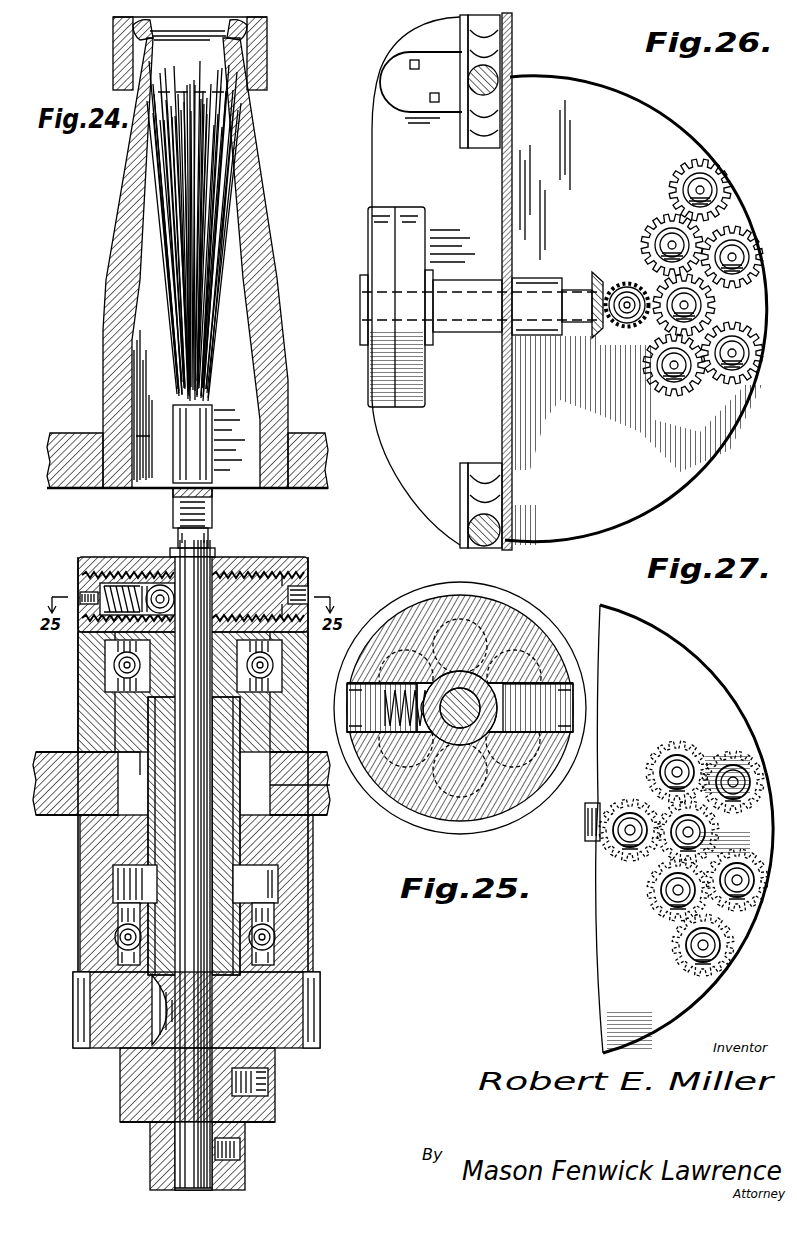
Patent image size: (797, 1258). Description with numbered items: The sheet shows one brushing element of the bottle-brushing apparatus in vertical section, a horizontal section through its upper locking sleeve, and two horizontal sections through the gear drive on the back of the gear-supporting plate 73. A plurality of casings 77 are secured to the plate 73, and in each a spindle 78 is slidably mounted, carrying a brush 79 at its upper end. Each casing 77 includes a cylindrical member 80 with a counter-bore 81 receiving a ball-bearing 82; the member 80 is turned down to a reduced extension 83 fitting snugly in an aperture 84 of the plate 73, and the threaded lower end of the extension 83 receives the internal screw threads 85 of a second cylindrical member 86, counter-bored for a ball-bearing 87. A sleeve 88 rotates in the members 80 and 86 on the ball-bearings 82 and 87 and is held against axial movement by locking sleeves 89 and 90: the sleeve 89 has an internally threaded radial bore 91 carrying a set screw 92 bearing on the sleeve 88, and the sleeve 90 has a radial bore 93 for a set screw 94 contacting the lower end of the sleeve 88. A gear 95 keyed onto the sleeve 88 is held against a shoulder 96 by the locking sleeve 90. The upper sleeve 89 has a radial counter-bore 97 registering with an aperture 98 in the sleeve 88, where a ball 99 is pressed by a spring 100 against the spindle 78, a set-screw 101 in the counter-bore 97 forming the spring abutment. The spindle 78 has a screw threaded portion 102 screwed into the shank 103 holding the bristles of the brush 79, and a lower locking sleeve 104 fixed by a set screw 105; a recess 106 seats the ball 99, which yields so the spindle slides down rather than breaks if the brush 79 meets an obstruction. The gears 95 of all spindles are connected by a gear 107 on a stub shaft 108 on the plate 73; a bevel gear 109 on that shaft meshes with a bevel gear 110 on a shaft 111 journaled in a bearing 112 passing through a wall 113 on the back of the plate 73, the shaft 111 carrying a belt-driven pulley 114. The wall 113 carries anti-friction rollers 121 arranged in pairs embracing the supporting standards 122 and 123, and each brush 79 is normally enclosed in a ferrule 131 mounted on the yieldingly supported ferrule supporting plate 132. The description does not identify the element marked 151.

In FIG. 24, the gear-supporting plate 73 is at (44, 815).
In FIG. 26, the gear-supporting plate 73 is at (596, 88).
In FIG. 27, the gear-supporting plate 73 is at (660, 645).
In FIG. 24, the casing 77 is at (70, 721).
In FIG. 24, the spindle 78 is at (186, 882).
In FIG. 27, the spindle 78 is at (733, 795).
In FIG. 25, the spindle 78 is at (462, 690).
In FIG. 24, the brush 79 is at (142, 245).
In FIG. 24, the cylindrical member 80 is at (82, 682).
In FIG. 24, the counter-bore 81 is at (106, 651).
In FIG. 24, the ball-bearing 82 is at (78, 660).
In FIG. 24, the reduced extension 83 is at (118, 752).
In FIG. 24, the aperture 84 is at (313, 795).
In FIG. 24, the internal screw threads 85 is at (262, 842).
In FIG. 24, the second cylindrical member 86 is at (285, 882).
In FIG. 24, the ball-bearing 87 is at (280, 918).
In FIG. 24, the sleeve 88 is at (160, 1062).
In FIG. 25, the sleeve 88 is at (530, 682).
In FIG. 24, the locking sleeve 89 is at (306, 575).
In FIG. 25, the locking sleeve 89 is at (490, 690).
In FIG. 24, the locking sleeve 90 is at (268, 1105).
In FIG. 24, the radial bore 91 is at (286, 568).
In FIG. 24, the set screw 92 is at (308, 590).
In FIG. 25, the set screw 92 is at (560, 690).
In FIG. 24, the radial bore 93 is at (262, 1072).
In FIG. 24, the set screw 94 is at (268, 1085).
In FIG. 24, the gear 95 is at (320, 997).
In FIG. 26, the gear 95 is at (718, 166).
In FIG. 27, the gear 95 is at (726, 745).
In FIG. 24, the shoulder 96 is at (150, 985).
In FIG. 24, the radial counter-bore 97 is at (143, 588).
In FIG. 24, the aperture 98 is at (174, 548).
In FIG. 25, the aperture 98 is at (435, 694).
In FIG. 24, the ball 99 is at (158, 585).
In FIG. 25, the ball 99 is at (415, 688).
In FIG. 24, the spring 100 is at (112, 585).
In FIG. 25, the spring 100 is at (385, 690).
In FIG. 24, the set-screw 101 is at (80, 592).
In FIG. 25, the set-screw 101 is at (354, 690).
In FIG. 24, the screw threaded portion 102 is at (212, 500).
In FIG. 24, the shank 103 is at (176, 472).
In FIG. 24, the locking sleeve 104 is at (245, 1178).
In FIG. 26, the locking sleeve 104 is at (674, 382).
In FIG. 24, the set screw 105 is at (240, 1146).
In FIG. 24, the recess 106 is at (222, 552).
In FIG. 27, the gear 107 is at (645, 790).
In FIG. 26, the stub shaft 108 is at (627, 283).
In FIG. 27, the stub shaft 108 is at (633, 850).
In FIG. 26, the bevel gear 109 is at (606, 328).
In FIG. 26, the bevel gear 110 is at (598, 290).
In FIG. 27, the bevel gear 110 is at (613, 796).
In FIG. 26, the shaft 111 is at (566, 277).
In FIG. 26, the bearing 112 is at (548, 280).
In FIG. 26, the wall 113 is at (502, 393).
In FIG. 26, the pulley 114 is at (408, 212).
In FIG. 26, the anti-friction rollers 121 is at (460, 22).
In FIG. 26, the supporting standard 122 is at (468, 537).
In FIG. 26, the supporting standard 123 is at (468, 80).
In FIG. 24, the ferrule 131 is at (247, 178).
In FIG. 24, the ferrule supporting plate 132 is at (76, 432).
In FIG. 24, the cap 151 is at (262, 50).